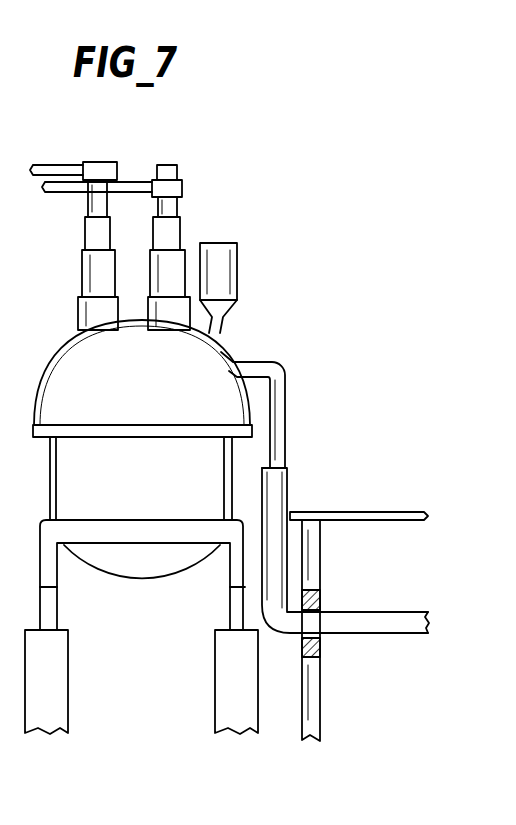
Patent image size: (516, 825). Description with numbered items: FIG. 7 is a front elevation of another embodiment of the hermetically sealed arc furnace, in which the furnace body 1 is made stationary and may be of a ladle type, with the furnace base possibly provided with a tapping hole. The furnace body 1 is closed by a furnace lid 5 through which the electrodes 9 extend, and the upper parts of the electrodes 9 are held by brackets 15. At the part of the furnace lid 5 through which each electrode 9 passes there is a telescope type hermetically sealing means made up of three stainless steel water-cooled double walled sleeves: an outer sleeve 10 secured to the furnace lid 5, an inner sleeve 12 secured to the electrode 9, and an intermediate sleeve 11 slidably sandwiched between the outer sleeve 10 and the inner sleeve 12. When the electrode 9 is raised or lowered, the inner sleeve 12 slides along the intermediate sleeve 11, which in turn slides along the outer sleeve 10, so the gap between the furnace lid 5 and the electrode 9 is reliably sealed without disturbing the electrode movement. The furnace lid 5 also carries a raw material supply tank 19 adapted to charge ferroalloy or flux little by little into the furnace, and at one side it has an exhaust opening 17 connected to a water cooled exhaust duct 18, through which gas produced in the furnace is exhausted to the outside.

The furnace body 1 is at (222, 492).
The furnace lid 5 is at (250, 405).
The electrode 9 is at (168, 165).
The outer water-cooled double walled sleeve 10 is at (200, 290).
The intermediate water-cooled double walled sleeve 11 is at (185, 252).
The inner water-cooled double walled sleeve 12 is at (178, 220).
The bracket 15 is at (58, 188).
The exhaust opening 17 is at (223, 352).
The water cooled exhaust duct 18 is at (283, 437).
The raw material supply tank 19 is at (232, 252).